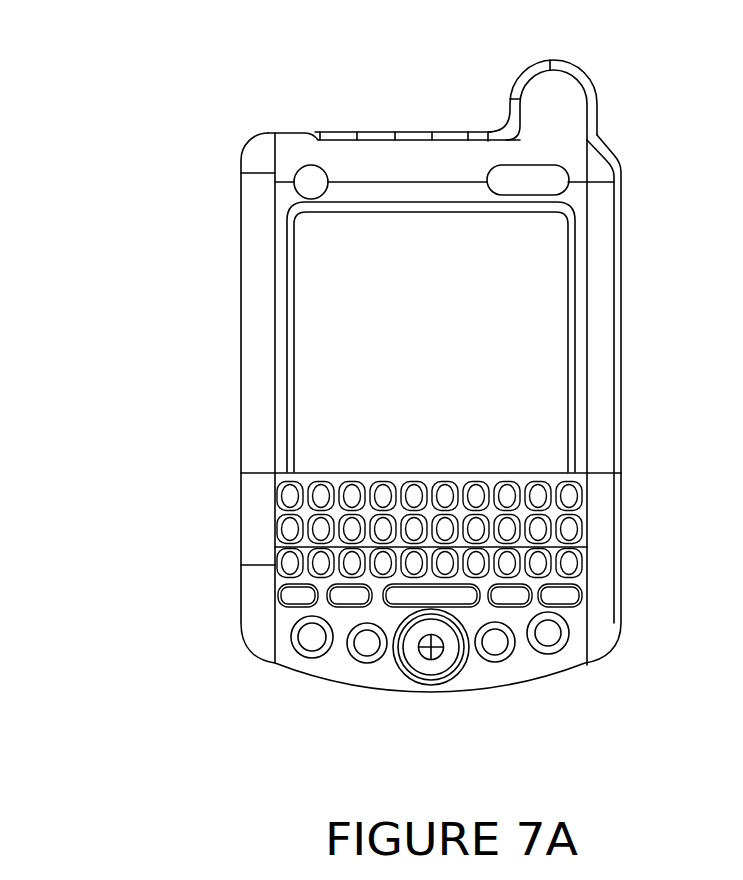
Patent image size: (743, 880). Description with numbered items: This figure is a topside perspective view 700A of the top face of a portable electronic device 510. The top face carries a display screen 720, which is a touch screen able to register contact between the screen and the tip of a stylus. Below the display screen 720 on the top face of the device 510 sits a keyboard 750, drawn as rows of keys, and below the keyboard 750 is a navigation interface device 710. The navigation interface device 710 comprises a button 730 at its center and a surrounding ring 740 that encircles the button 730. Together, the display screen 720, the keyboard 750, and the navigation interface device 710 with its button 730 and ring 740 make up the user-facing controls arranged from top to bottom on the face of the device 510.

The topside perspective view 700A is at (78, 45).
The portable electronic device 510 is at (617, 131).
The display screen 720 is at (447, 390).
The keyboard 750 is at (632, 602).
The navigation interface device 710 is at (468, 671).
The surrounding ring 740 is at (408, 664).
The button 730 is at (438, 668).